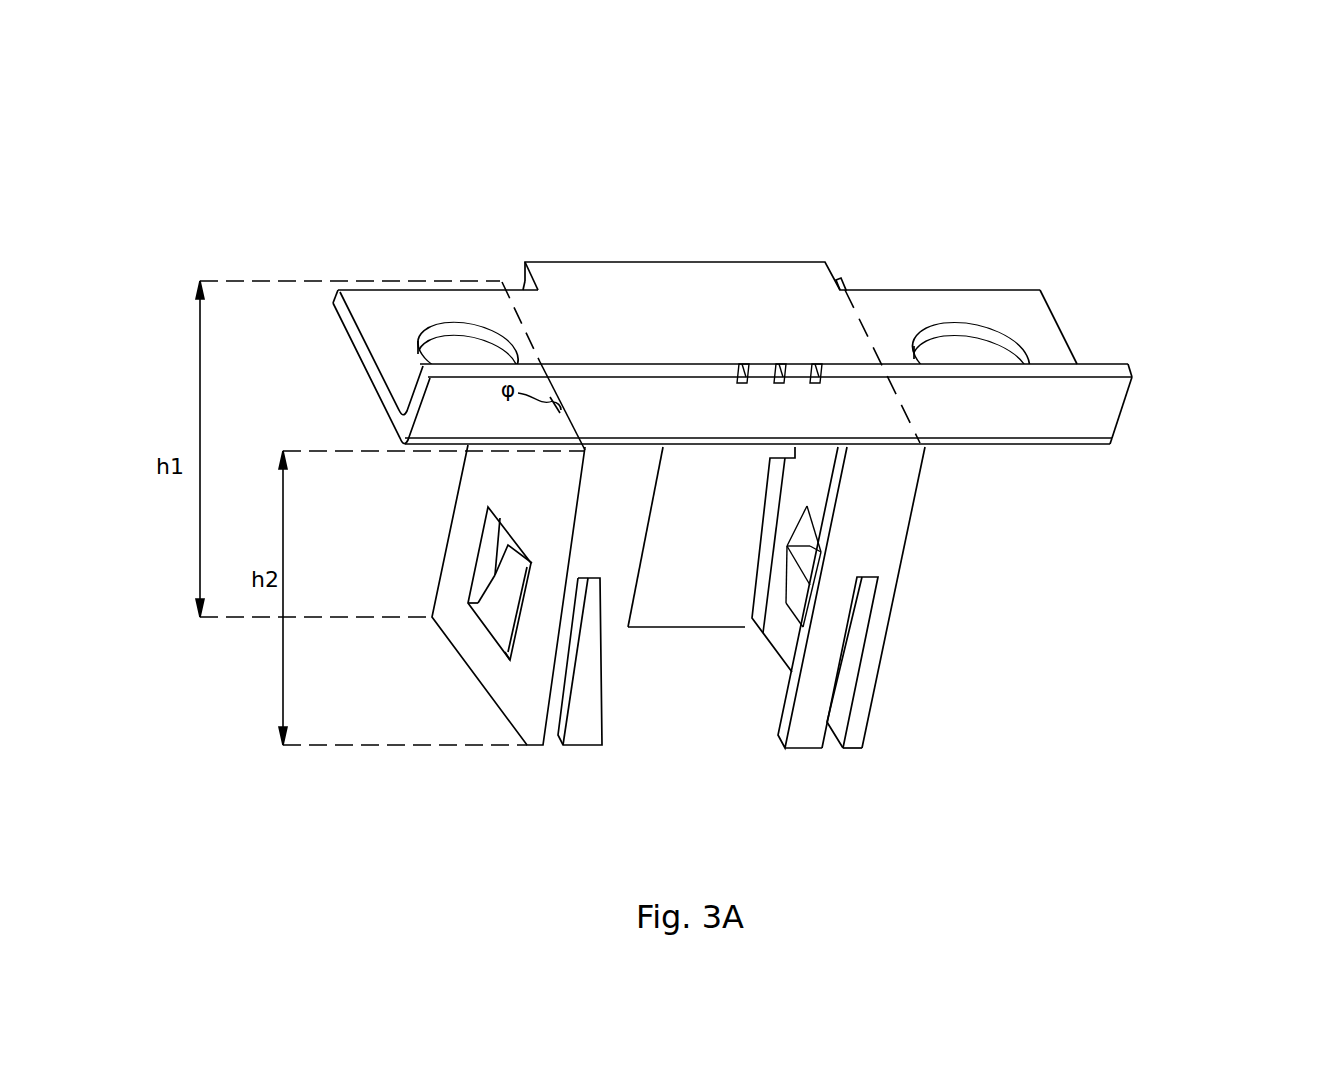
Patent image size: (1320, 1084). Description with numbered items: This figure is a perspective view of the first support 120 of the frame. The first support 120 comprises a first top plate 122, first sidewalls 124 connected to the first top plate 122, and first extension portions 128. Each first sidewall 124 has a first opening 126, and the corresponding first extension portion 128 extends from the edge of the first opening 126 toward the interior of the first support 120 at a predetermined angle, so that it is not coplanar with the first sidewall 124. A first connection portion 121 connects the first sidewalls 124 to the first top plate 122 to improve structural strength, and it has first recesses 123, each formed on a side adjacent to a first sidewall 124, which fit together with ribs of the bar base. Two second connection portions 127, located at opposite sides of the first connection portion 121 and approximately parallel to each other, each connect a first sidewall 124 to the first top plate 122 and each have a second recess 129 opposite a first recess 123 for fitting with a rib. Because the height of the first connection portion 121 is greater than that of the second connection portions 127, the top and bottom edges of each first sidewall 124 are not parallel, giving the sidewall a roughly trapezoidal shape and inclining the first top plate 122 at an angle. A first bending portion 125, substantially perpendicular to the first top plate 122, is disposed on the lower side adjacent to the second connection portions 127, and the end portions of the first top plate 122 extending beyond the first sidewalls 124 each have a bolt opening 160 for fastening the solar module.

The first support 120 is at (955, 197).
The first connection portion 121 is at (710, 483).
The first top plate 122 is at (700, 287).
The first recess 123 is at (746, 609).
The first sidewall 124 is at (485, 468).
The first bending portion 125 is at (1088, 412).
The first opening 126 is at (470, 571).
The second connection portion 127 is at (878, 562).
The first extension portion 128 is at (490, 620).
The second recess 129 is at (847, 676).
The bolt opening 160 is at (972, 352).